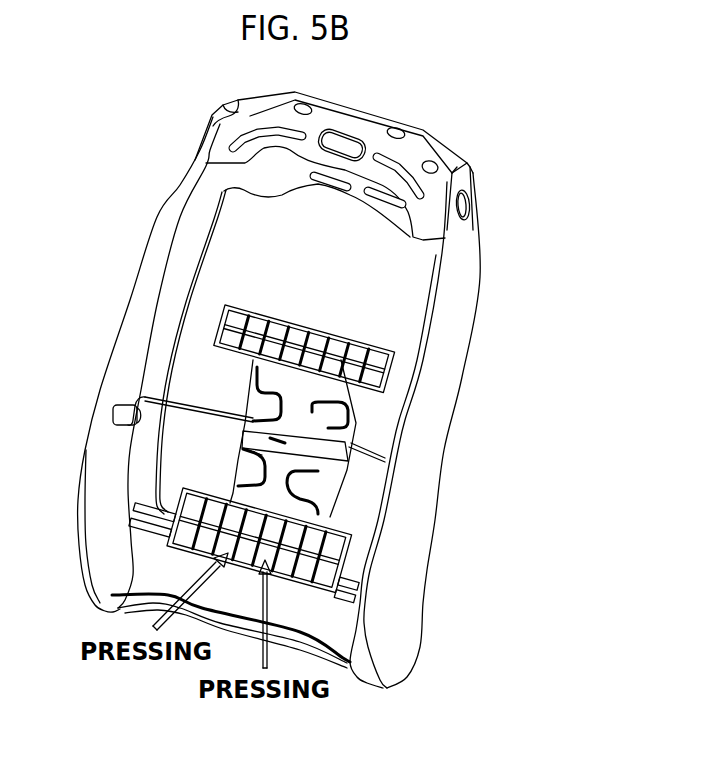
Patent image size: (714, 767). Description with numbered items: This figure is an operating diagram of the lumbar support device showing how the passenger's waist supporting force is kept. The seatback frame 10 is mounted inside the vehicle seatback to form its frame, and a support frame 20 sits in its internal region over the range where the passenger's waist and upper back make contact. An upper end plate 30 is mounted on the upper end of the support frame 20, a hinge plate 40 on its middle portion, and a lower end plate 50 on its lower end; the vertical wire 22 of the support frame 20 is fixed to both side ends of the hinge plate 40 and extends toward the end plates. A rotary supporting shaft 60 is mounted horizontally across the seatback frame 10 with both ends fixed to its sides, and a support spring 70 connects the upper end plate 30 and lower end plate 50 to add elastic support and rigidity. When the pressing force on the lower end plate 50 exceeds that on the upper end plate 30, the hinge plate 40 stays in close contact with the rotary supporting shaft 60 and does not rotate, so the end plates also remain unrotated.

The seatback frame 10 is at (458, 295).
The support frame 20 is at (352, 415).
The vertical wire 22 is at (345, 502).
The upper end plate 30 is at (282, 320).
The hinge plate 40 is at (283, 443).
The lower end plate 50 is at (190, 500).
The rotary supporting shaft 60 is at (383, 458).
The support spring 70 is at (253, 395).